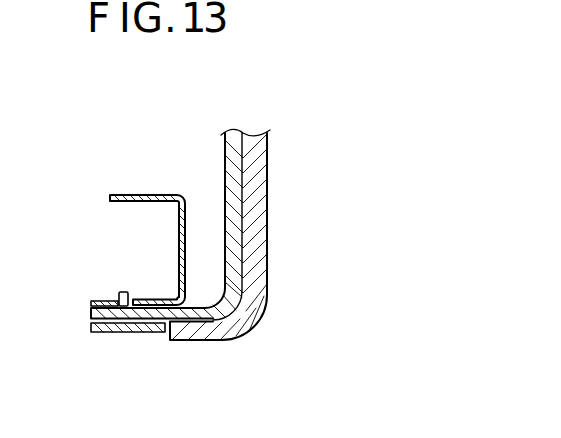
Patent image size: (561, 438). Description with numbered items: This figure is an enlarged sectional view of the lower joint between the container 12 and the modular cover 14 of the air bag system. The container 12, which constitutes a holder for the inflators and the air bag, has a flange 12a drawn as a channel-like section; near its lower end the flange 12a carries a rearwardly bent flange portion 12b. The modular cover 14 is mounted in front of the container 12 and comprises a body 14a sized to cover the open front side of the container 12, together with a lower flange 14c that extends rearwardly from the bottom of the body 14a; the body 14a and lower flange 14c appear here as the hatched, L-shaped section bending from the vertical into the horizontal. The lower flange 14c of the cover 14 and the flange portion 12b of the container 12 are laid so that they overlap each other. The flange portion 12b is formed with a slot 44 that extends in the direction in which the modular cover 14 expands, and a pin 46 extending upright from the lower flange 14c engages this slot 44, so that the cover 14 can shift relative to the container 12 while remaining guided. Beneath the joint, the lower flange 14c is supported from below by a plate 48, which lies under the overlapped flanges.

The container 12 is at (129, 195).
The flange 12a is at (185, 230).
The flange portion 12b is at (100, 300).
The modular cover 14 is at (197, 239).
The body 14a is at (268, 156).
The lower flange 14c is at (90, 318).
The slot 44 is at (133, 300).
The pin 46 is at (124, 291).
The plate 48 is at (125, 338).